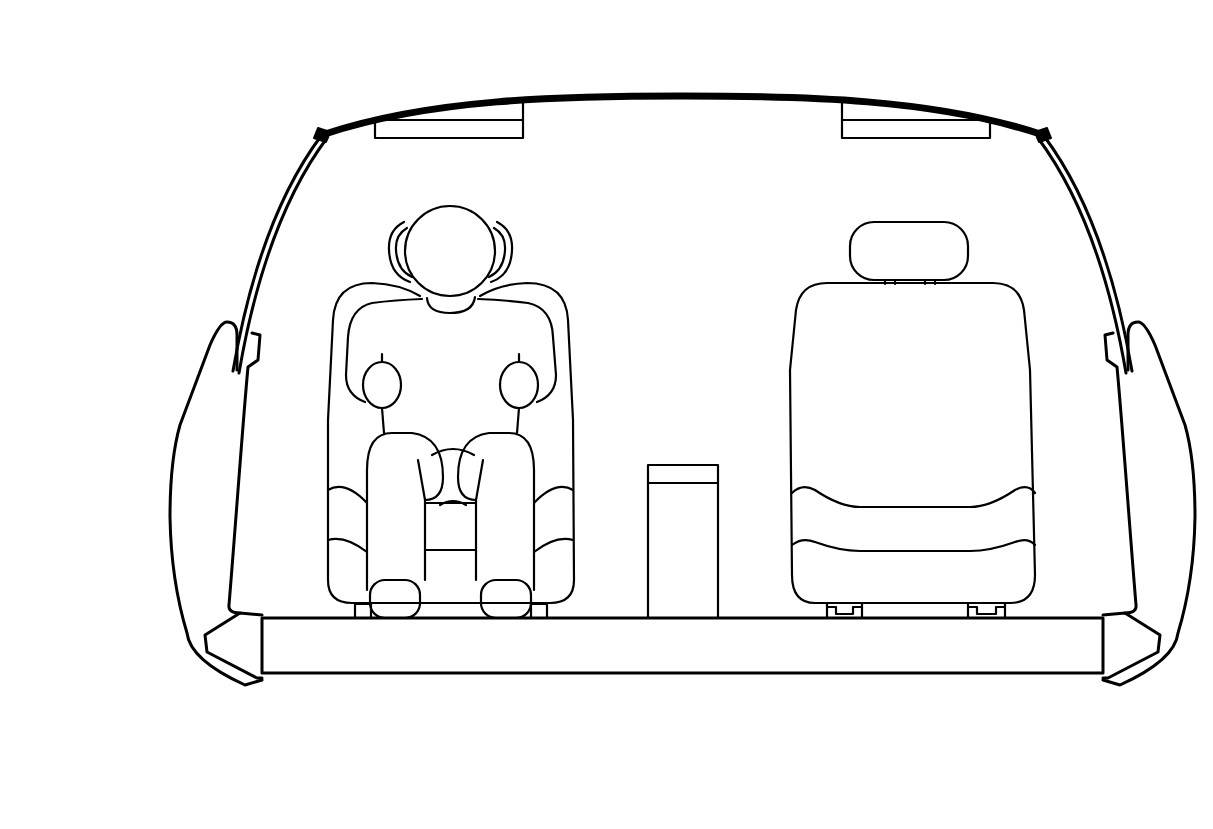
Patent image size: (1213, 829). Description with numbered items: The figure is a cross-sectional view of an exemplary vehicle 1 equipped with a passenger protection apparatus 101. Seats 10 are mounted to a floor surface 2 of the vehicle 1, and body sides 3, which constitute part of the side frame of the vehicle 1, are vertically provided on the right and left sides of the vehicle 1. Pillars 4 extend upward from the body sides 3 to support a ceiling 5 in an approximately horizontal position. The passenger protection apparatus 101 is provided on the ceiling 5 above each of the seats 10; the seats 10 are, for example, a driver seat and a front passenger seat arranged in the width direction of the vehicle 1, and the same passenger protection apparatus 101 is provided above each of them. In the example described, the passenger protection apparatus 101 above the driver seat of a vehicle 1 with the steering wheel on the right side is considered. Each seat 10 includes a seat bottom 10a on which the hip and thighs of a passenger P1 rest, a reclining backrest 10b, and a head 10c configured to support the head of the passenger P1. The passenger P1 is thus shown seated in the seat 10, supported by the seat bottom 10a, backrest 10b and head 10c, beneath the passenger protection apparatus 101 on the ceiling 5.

The vehicle 1 is at (996, 91).
The floor surface 2 is at (363, 657).
The body side 3 is at (192, 575).
The pillar 4 is at (268, 230).
The ceiling 5 is at (352, 112).
The passenger protection apparatus 101 is at (510, 128).
The seat 10 is at (633, 255).
The seat bottom 10a is at (565, 512).
The backrest 10b is at (565, 368).
The head 10c is at (507, 255).
The passenger P1 is at (478, 213).